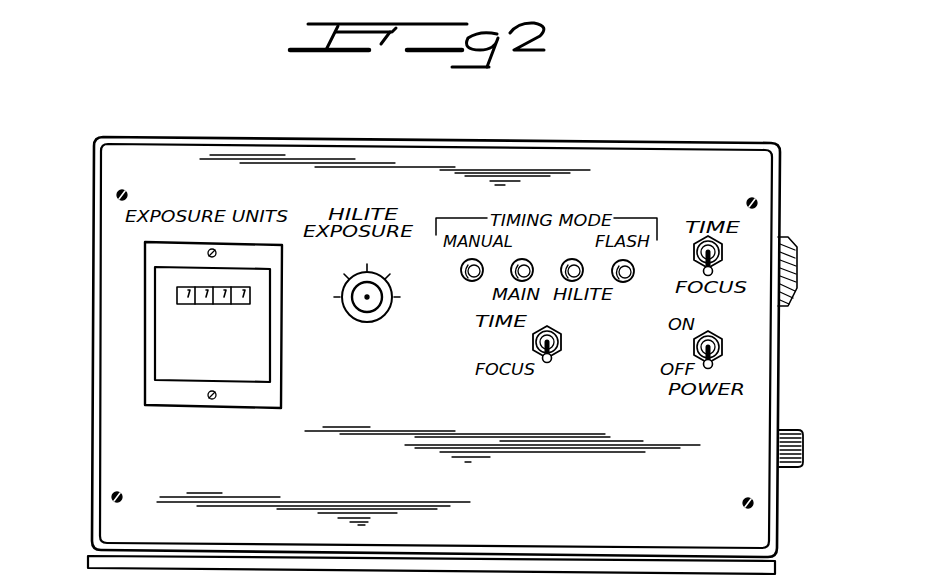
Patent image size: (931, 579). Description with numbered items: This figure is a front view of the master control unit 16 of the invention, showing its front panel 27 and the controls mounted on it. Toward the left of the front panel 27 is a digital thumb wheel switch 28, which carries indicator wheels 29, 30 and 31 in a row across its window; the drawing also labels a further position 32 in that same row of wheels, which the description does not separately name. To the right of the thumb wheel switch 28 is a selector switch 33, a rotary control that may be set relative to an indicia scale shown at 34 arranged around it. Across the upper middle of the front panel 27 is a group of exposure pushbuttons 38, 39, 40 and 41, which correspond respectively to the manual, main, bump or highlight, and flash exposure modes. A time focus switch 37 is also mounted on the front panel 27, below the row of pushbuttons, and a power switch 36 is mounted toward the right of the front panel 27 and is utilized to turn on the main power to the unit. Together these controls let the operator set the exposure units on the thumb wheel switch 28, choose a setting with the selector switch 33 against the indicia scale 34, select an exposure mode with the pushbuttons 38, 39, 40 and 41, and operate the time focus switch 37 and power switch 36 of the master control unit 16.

The master control unit 16 is at (706, 137).
The front panel 27 is at (512, 171).
The digital thumb wheel switch 28 is at (250, 368).
The indicator wheel 29 is at (178, 297).
The indicator wheel 30 is at (200, 303).
The indicator wheel 31 is at (218, 305).
The third counter digit wheel 32 is at (243, 303).
The selector switch 33 is at (365, 299).
The indicia scale 34 is at (390, 250).
The power switch 36 is at (696, 352).
The time focus switch 37 is at (548, 362).
The manual exposure pushbutton 38 is at (463, 276).
The main exposure pushbutton 39 is at (548, 246).
The bump or highlight exposure pushbutton 40 is at (582, 248).
The flash exposure pushbutton 41 is at (670, 268).